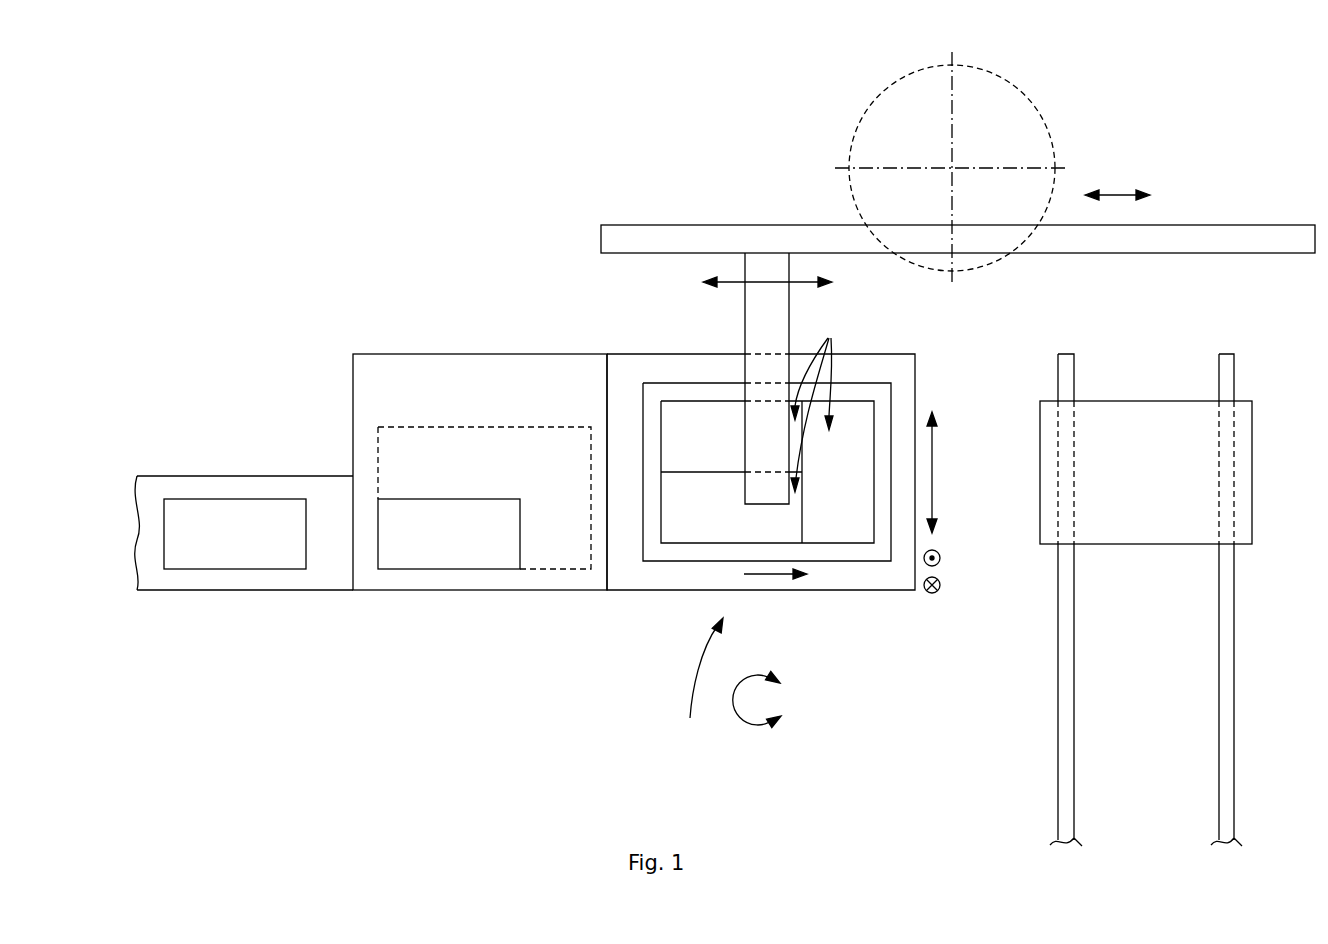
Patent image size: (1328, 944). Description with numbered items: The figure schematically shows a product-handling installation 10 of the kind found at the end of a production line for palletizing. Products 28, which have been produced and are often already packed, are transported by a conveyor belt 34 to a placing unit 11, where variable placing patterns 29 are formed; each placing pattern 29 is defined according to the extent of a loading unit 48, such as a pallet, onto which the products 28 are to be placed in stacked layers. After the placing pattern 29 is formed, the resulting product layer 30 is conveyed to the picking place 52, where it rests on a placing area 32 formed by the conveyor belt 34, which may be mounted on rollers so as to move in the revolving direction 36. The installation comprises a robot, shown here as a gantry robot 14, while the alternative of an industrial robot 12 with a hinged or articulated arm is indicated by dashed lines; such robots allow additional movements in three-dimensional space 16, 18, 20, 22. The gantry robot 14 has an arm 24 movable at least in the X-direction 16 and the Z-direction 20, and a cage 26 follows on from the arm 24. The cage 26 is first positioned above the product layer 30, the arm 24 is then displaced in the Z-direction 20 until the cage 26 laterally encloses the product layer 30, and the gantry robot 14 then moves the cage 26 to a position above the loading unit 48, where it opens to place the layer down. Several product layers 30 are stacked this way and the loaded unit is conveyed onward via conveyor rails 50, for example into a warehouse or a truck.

The product-handling installation 10 is at (583, 296).
The placing unit 11 is at (396, 625).
The industrial robot 12 is at (1050, 125).
The gantry robot 14 is at (674, 225).
The X-direction 16 is at (762, 282).
The direction of three-dimensional space 18 is at (940, 472).
The Z-direction 20 is at (945, 572).
The direction of three-dimensional space 22 is at (757, 727).
The arm 24 is at (762, 323).
The cage 26 is at (672, 561).
The products 28 is at (246, 547).
The placing pattern 29 is at (818, 401).
The product layer 30 is at (650, 406).
The placing area 32 is at (836, 590).
The conveyor belt 34 is at (472, 590).
The revolving direction 36 is at (765, 590).
The loading unit 48 is at (1145, 408).
The conveyor rails 50 is at (1065, 727).
The picking place 52 is at (699, 682).